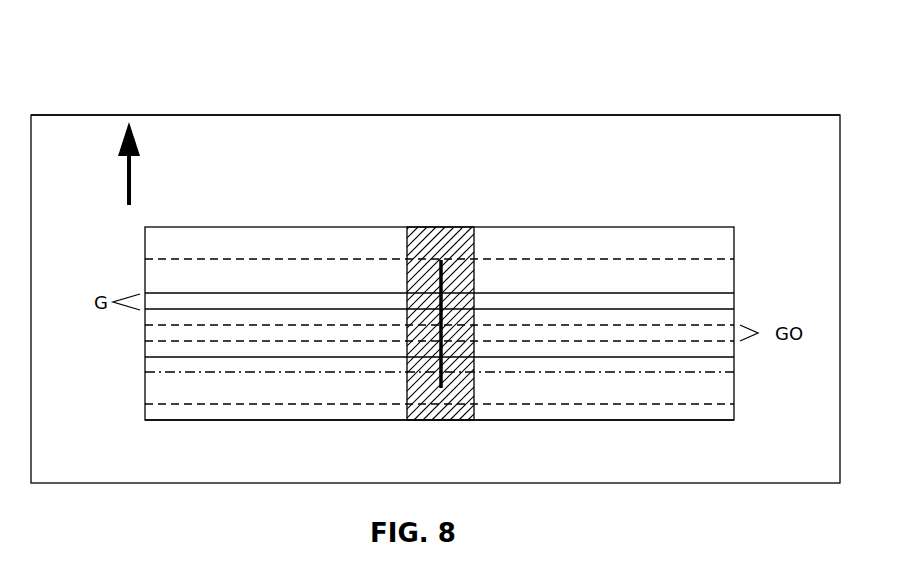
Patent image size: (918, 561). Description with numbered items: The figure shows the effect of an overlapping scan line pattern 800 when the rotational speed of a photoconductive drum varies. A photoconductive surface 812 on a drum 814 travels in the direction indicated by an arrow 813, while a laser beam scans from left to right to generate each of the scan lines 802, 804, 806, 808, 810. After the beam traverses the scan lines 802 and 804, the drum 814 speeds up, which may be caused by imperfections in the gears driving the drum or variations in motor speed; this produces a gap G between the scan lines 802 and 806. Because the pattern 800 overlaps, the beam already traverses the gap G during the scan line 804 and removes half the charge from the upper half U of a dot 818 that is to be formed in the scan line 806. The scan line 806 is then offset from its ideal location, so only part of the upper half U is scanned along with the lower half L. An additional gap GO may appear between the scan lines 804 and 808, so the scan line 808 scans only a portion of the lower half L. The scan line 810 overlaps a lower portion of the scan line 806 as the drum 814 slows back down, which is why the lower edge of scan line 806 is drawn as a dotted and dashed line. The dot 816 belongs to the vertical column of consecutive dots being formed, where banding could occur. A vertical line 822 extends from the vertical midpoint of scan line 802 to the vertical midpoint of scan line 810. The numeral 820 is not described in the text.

The overlapping scan line pattern 800 is at (448, 183).
The scan line 802 is at (137, 228).
The scan line 804 is at (740, 260).
The scan line 806 is at (137, 311).
The scan line 808 is at (740, 341).
The scan line 810 is at (137, 358).
The photoconductive surface 812 is at (243, 130).
The arrow 813 is at (135, 172).
The drum 814 is at (650, 113).
The dot 816 is at (462, 237).
The dot 818 is at (470, 300).
The lower portion 820 is at (468, 377).
The vertical line 822 is at (440, 262).